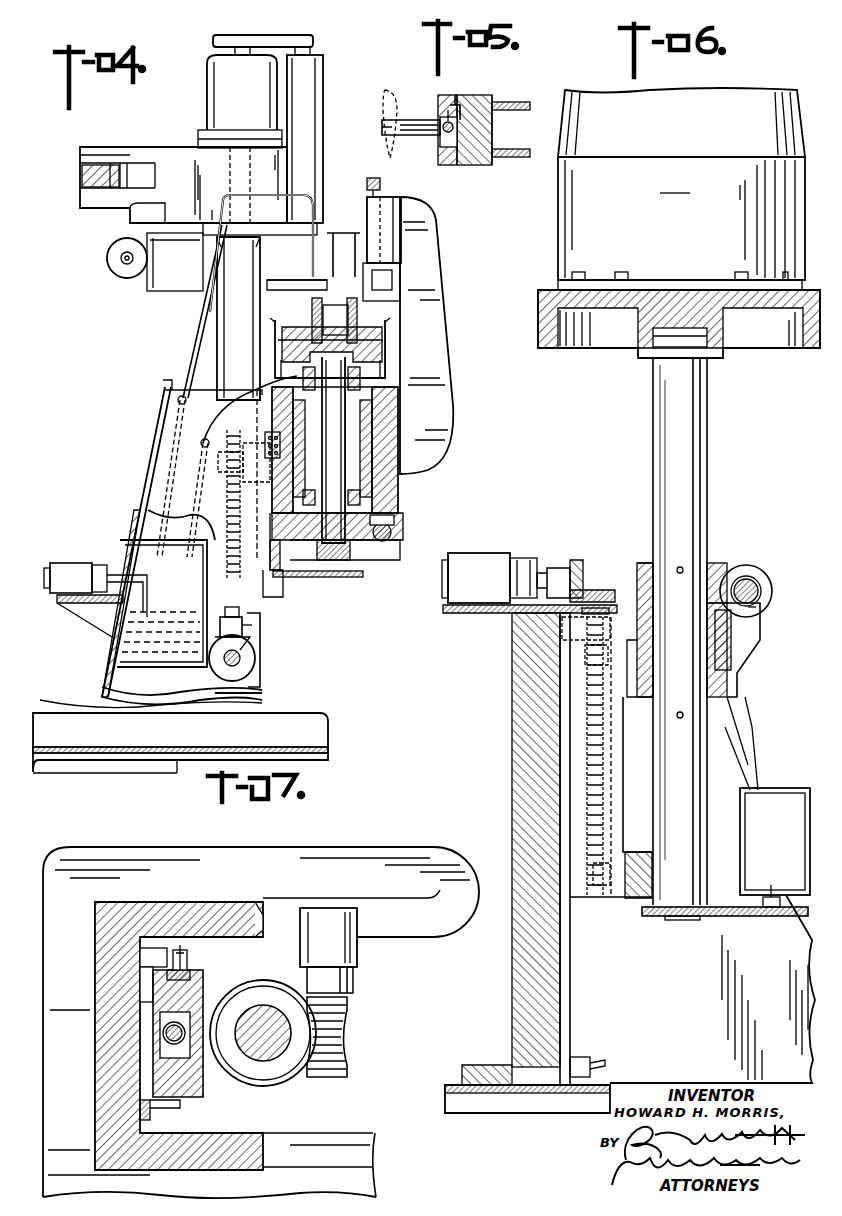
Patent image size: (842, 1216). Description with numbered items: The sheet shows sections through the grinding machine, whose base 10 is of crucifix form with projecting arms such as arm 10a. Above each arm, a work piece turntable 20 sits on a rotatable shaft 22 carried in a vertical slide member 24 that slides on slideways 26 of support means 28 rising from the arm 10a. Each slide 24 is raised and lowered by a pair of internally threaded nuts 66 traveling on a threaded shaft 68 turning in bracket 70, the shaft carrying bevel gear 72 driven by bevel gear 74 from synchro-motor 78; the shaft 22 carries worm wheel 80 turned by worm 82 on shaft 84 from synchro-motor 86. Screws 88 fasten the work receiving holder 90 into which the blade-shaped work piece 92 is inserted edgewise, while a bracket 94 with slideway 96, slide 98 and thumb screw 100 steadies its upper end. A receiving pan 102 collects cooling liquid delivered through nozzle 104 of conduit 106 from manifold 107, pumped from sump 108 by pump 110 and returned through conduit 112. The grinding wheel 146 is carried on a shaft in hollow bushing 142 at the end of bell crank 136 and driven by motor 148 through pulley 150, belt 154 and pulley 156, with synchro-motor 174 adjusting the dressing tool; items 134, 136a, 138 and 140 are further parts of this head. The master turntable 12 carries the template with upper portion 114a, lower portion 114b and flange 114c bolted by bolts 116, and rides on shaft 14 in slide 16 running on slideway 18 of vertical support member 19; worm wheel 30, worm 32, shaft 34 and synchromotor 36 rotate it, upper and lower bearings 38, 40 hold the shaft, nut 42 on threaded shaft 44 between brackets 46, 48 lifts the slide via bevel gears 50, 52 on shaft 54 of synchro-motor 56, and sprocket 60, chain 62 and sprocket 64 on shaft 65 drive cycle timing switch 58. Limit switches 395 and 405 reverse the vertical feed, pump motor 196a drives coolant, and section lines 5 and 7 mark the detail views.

In FIG. 6, the base 10 is at (490, 1117).
In FIG. 4, the projecting arm 10a is at (345, 748).
In FIG. 6, the master turntable 12 is at (550, 285).
In FIG. 6, the rotatable shaft 14 is at (697, 412).
In FIG. 7, the rotatable shaft 14 is at (270, 1040).
In FIG. 6, the slide 16 is at (643, 783).
In FIG. 7, the slide 16 is at (197, 978).
In FIG. 6, the slideway 18 is at (568, 957).
In FIG. 7, the slideway 18 is at (128, 1044).
In FIG. 6, the vertical support member 19 is at (518, 975).
In FIG. 7, the vertical support member 19 is at (100, 943).
In FIG. 4, the turntable 20 is at (360, 330).
In FIG. 4, the rotatable shaft 22 is at (331, 450).
In FIG. 4, the vertical slide member 24 is at (385, 407).
In FIG. 4, the slideways 26 is at (265, 598).
In FIG. 4, the support means 28 is at (158, 410).
In FIG. 6, the worm wheel 30 is at (720, 565).
In FIG. 7, the worm wheel 30 is at (263, 1086).
In FIG. 6, the worm 32 is at (762, 590).
In FIG. 7, the worm 32 is at (342, 1040).
In FIG. 6, the shaft 34 is at (764, 618).
In FIG. 7, the shaft 34 is at (330, 988).
In FIG. 6, the synchromotor 36 is at (755, 570).
In FIG. 7, the synchromotor 36 is at (338, 941).
In FIG. 6, the upper bearing 38 is at (740, 684).
In FIG. 6, the lower bearing 40 is at (713, 918).
In FIG. 6, the internally threaded nut 42 is at (595, 690).
In FIG. 7, the internally threaded nut 42 is at (165, 1113).
In FIG. 6, the threaded shaft 44 is at (595, 705).
In FIG. 7, the threaded shaft 44 is at (162, 1032).
In FIG. 6, the bracket 46 is at (600, 600).
In FIG. 6, the bracket 48 is at (585, 900).
In FIG. 6, the bevel gear 50 is at (593, 607).
In FIG. 6, the bevel gear 52 is at (580, 560).
In FIG. 6, the shaft 54 is at (552, 568).
In FIG. 6, the synchro-motor 56 is at (488, 588).
In FIG. 6, the cycle timing switch 58 is at (784, 832).
In FIG. 6, the sprocket 60 is at (665, 921).
In FIG. 6, the chain 62 is at (748, 917).
In FIG. 6, the sprocket 64 is at (785, 918).
In FIG. 6, the cycle timing switch shaft 65 is at (771, 887).
In FIG. 4, the internally threaded nut 66 is at (236, 435).
In FIG. 4, the threaded shaft 68 is at (240, 612).
In FIG. 4, the bracket 70 is at (252, 635).
In FIG. 4, the bevel gear 72 is at (256, 660).
In FIG. 4, the bevel gear 74 is at (262, 678).
In FIG. 4, the synchro-motor 78 is at (262, 693).
In FIG. 4, the worm wheel 80 is at (300, 560).
In FIG. 4, the worm 82 is at (340, 560).
In FIG. 4, the shaft 84 is at (360, 577).
In FIG. 4, the synchro-motor 86 is at (404, 530).
In FIG. 4, the screws 88 is at (312, 308).
In FIG. 4, the work receiving holder 90 is at (360, 305).
In FIG. 4, the work piece 92 is at (330, 287).
In FIG. 5, the work piece 92 is at (393, 90).
In FIG. 4, the bracket 94 is at (430, 300).
In FIG. 5, the bracket 94 is at (494, 128).
In FIG. 5, the slideway 96 is at (457, 150).
In FIG. 4, the slide 98 is at (385, 210).
In FIG. 4, the thumb screw 100 is at (373, 176).
In FIG. 5, the thumb screw 100 is at (450, 108).
In FIG. 4, the receiving pan 102 is at (387, 352).
In FIG. 4, the nozzle 104 is at (344, 255).
In FIG. 4, the conduit 106 is at (196, 312).
In FIG. 4, the manifold 107 is at (140, 553).
In FIG. 4, the sump 108 is at (125, 647).
In FIG. 4, the pump 110 is at (105, 572).
In FIG. 4, the conduit 112 is at (234, 403).
In FIG. 6, the upper portion 114a is at (690, 119).
In FIG. 6, the lower portion 114b is at (572, 215).
In FIG. 6, the flange 114c is at (672, 285).
In FIG. 6, the bolts 116 is at (620, 270).
In FIG. 4, the clamp block 134 is at (82, 176).
In FIG. 4, the bell crank 136 is at (178, 150).
In FIG. 4, the arm lip 136a is at (80, 153).
In FIG. 4, the slot 138 is at (230, 173).
In FIG. 4, the column 140 is at (249, 296).
In FIG. 4, the hollow bushing 142 is at (316, 100).
In FIG. 4, the grinding wheel 146 is at (280, 282).
In FIG. 4, the motor 148 is at (246, 104).
In FIG. 4, the pulley 150 is at (218, 36).
In FIG. 4, the belt 154 is at (275, 36).
In FIG. 4, the pulley 156 is at (308, 36).
In FIG. 4, the synchro-motor 174 is at (107, 255).
In FIG. 4, the pump motor 196a is at (62, 572).
In FIG. 6, the up limit switch 395 is at (585, 655).
In FIG. 6, the down limit switch 405 is at (580, 1057).
In FIG. 7, the down limit switch 405 is at (153, 955).
In FIG. 4, the section line 5 is at (343, 183).
In FIG. 6, the section line 7 is at (618, 560).